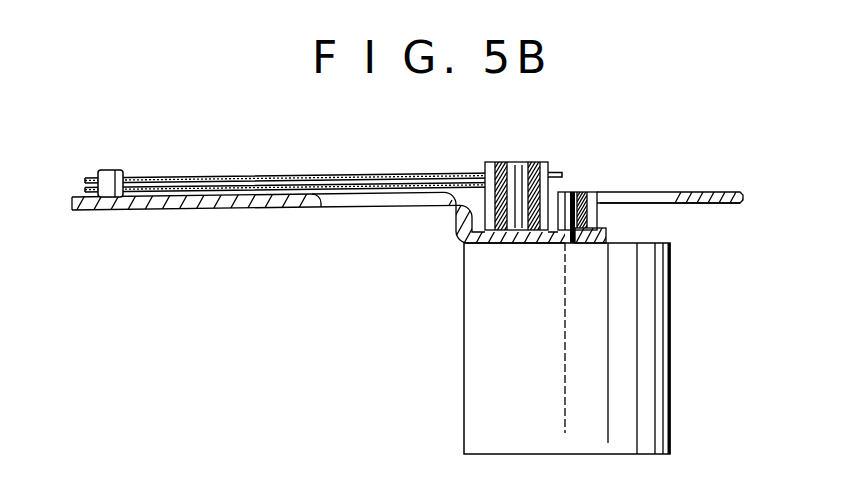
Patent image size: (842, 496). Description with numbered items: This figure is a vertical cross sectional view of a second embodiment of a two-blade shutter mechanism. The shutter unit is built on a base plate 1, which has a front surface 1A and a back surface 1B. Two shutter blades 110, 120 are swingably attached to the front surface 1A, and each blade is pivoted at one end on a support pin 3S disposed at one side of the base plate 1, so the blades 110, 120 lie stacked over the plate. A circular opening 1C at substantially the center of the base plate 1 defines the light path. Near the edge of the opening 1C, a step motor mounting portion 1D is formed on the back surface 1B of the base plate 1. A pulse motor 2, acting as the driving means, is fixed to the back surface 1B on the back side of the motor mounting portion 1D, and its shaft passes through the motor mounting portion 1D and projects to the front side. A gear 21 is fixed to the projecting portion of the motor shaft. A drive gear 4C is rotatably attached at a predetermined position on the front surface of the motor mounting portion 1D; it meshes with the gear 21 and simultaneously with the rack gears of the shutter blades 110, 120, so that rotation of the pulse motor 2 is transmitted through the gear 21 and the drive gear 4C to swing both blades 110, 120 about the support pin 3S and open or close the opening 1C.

The base plate 1 is at (168, 209).
The front surface 1A is at (733, 192).
The back surface 1B is at (730, 228).
The circular opening 1C is at (322, 208).
The motor mounting portion 1D is at (483, 246).
The pulse motor 2 is at (675, 377).
The support pin 3S is at (111, 170).
The drive gear 4C is at (544, 162).
The gear 21 is at (598, 216).
The shutter blade 110 is at (177, 177).
The shutter blade 120 is at (253, 186).